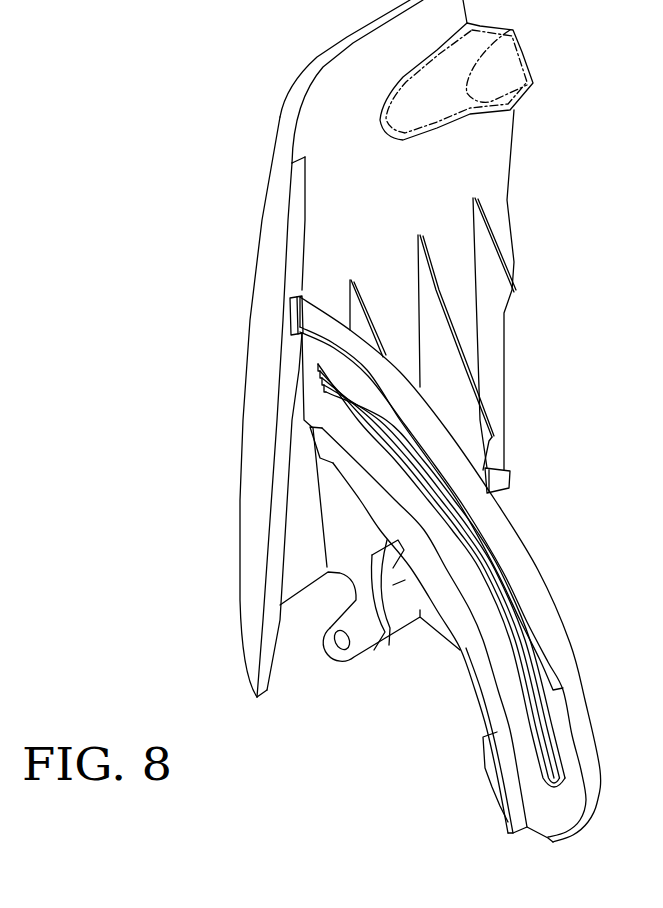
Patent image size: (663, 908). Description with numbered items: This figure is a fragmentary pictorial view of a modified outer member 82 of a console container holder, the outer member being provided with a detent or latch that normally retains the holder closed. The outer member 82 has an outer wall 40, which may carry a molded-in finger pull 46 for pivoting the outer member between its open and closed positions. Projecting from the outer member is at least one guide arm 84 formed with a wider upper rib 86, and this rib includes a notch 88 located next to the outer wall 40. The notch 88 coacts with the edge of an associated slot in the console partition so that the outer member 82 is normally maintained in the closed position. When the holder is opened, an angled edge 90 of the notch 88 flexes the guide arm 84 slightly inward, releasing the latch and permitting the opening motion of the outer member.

The outer wall 40 is at (262, 305).
The finger pull 46 is at (495, 68).
The modified outer member 82 is at (243, 267).
The guide arm 84 is at (433, 407).
The wider upper rib 86 is at (377, 397).
The notch 88 is at (290, 315).
The angled edge 90 is at (293, 326).